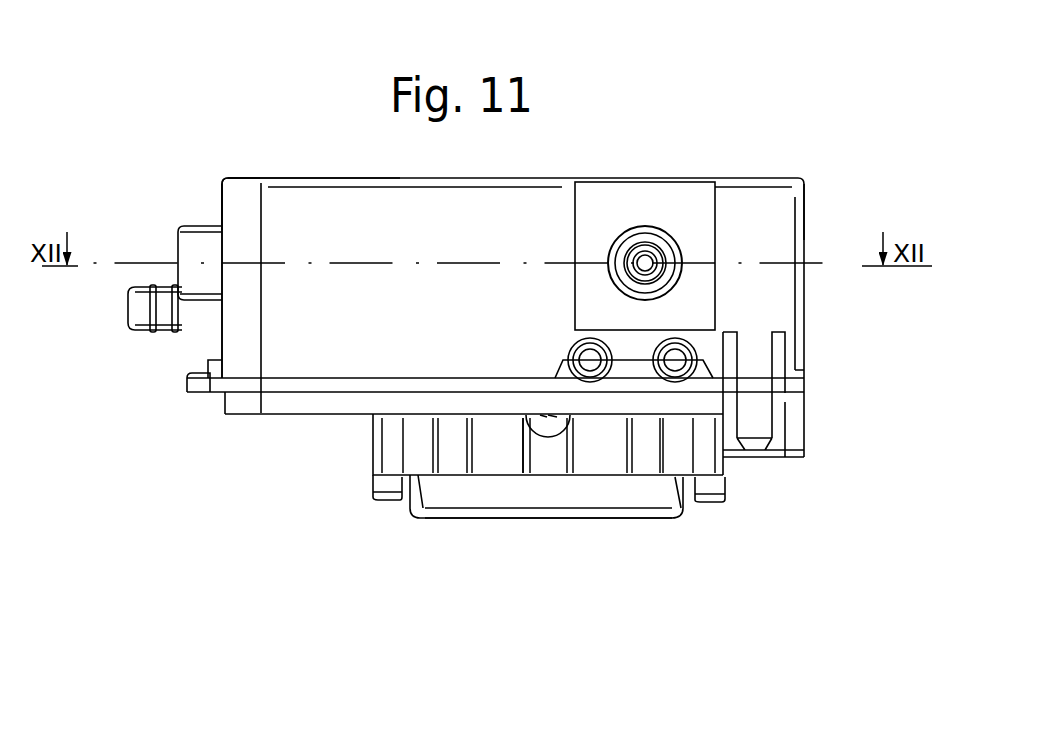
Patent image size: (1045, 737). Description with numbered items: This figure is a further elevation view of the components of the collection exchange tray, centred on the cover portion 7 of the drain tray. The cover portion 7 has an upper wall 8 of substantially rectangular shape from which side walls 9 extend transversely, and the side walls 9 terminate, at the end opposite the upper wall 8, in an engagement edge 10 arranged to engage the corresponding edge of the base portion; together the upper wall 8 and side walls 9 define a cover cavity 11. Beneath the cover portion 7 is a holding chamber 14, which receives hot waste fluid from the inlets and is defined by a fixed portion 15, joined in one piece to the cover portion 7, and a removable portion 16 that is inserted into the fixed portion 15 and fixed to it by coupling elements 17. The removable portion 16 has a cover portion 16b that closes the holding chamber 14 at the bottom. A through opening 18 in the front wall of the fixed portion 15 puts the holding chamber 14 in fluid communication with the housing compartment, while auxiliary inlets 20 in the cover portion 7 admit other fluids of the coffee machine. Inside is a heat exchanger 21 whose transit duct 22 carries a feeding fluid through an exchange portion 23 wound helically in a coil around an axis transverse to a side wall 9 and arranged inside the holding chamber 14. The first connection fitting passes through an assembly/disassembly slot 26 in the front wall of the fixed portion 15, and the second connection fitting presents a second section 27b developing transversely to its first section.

The cover portion 7 is at (781, 176).
The upper wall 8 is at (316, 180).
The side wall 9 is at (222, 204).
The engagement edge 10 is at (227, 415).
The cover cavity 11 is at (246, 484).
The holding chamber 14 is at (534, 522).
The fixed portion 15 is at (497, 443).
The removable portion 16 is at (642, 522).
The cover portion 16b is at (603, 502).
The coupling element 17 is at (378, 497).
The through opening 18 is at (542, 425).
The auxiliary inlet 20 is at (130, 307).
The heat exchanger 21 is at (552, 434).
The transit duct 22 is at (557, 417).
The exchange portion 23 is at (547, 417).
The assembly/disassembly slot 26 is at (648, 262).
The second section 27b is at (178, 248).